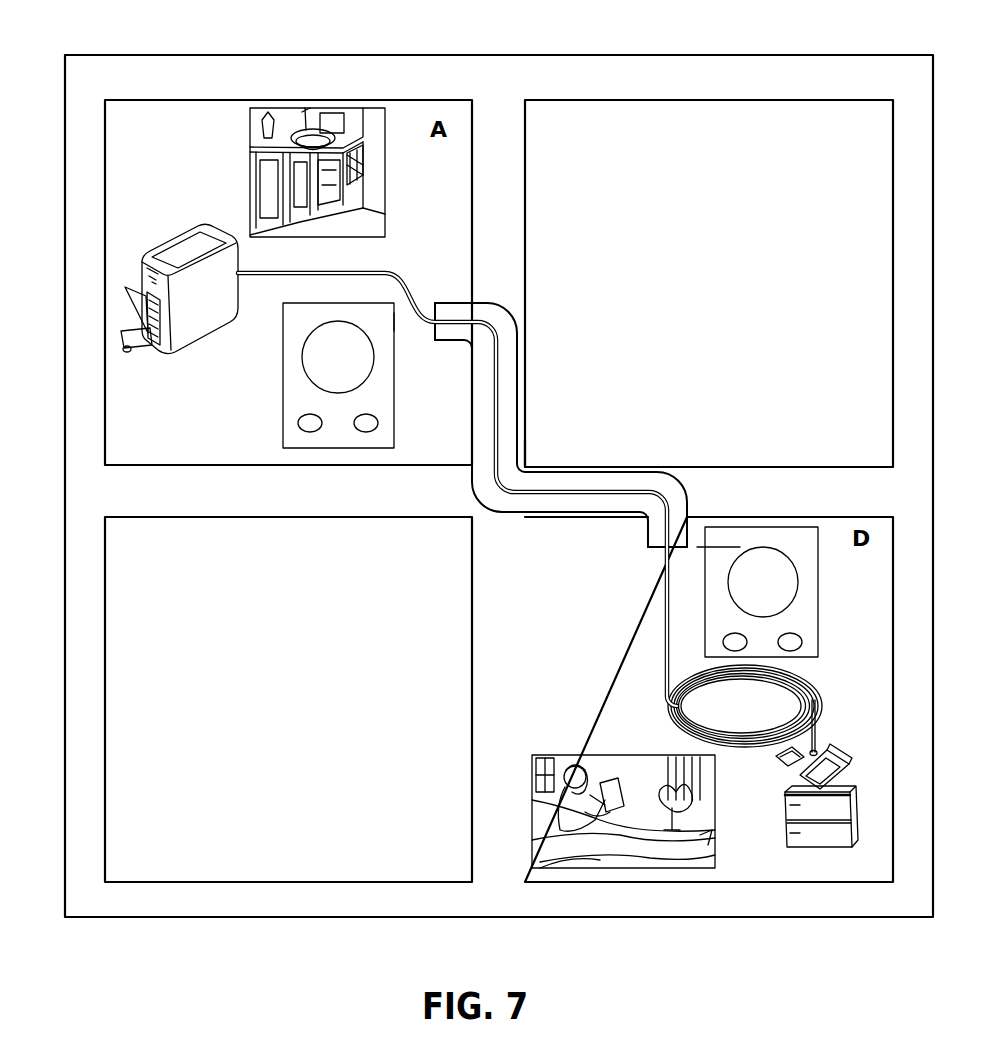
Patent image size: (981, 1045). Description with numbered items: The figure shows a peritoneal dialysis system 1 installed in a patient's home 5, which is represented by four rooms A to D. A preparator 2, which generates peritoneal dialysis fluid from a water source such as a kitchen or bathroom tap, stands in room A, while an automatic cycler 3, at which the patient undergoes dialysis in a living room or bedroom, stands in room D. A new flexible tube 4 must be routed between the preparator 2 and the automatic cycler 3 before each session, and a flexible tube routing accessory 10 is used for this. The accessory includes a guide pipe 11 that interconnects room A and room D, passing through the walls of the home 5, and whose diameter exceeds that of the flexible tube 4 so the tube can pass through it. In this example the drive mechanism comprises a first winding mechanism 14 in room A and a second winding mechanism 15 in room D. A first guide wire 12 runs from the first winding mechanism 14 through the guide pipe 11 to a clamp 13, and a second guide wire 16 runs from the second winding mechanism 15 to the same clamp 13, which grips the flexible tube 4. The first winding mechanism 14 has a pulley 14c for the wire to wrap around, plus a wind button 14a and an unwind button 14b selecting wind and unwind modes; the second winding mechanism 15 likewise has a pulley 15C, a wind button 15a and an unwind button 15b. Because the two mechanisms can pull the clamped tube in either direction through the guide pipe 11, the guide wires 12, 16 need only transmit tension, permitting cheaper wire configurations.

The peritoneal dialysis system 1 is at (123, 140).
The preparator 2 is at (156, 252).
The automatic cycler 3 is at (785, 828).
The flexible tube 4 is at (515, 342).
The patient's home 5 is at (676, 118).
The flexible tube routing accessory 10 is at (377, 578).
The guide pipe 11 is at (527, 467).
The first guide wire 12 is at (368, 320).
The clamp 13 is at (396, 322).
The first winding mechanism 14 is at (283, 446).
The wind button 14a is at (310, 433).
The unwind button 14b is at (364, 433).
The pulley 14c is at (302, 366).
The second winding mechanism 15 is at (780, 527).
The wind button 15a is at (723, 645).
The unwind button 15b is at (803, 641).
The pulley 15C is at (797, 570).
The second guide wire 16 is at (740, 547).